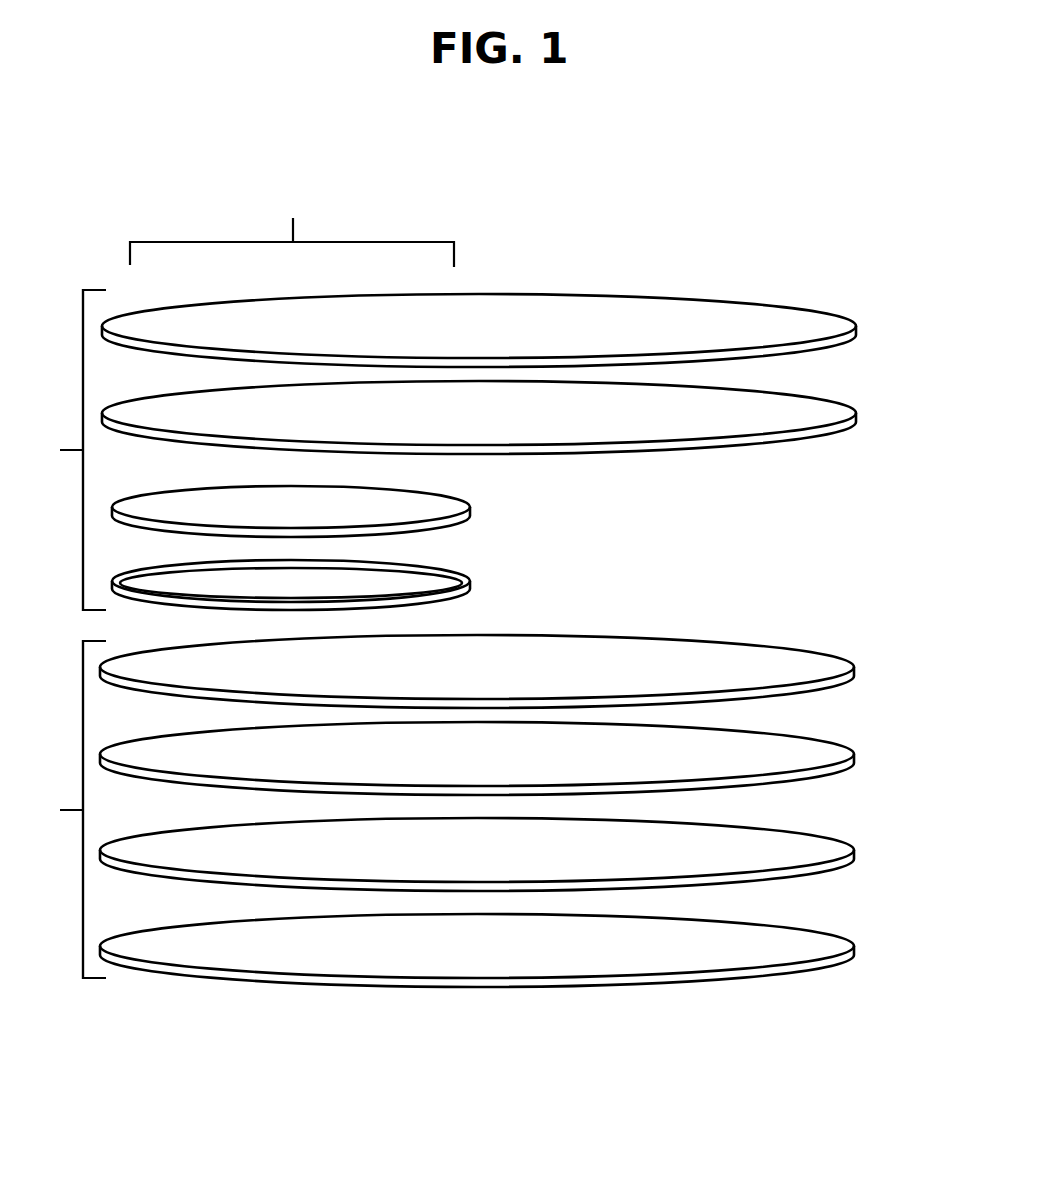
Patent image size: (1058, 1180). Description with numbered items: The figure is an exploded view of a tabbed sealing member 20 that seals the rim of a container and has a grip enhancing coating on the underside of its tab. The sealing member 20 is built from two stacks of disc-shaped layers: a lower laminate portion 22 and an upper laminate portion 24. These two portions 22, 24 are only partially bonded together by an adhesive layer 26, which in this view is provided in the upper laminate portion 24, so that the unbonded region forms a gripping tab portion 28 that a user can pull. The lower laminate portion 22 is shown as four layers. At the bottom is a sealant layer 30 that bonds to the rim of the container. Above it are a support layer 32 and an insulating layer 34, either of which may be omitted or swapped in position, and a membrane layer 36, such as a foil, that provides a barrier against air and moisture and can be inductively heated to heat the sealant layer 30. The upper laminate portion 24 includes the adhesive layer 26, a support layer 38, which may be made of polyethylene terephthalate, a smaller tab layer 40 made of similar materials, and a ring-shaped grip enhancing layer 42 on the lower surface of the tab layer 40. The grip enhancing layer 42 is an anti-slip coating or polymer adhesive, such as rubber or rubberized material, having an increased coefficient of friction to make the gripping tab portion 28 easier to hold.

The tabbed sealing member 20 is at (100, 264).
The lower laminate portion 22 is at (59, 809).
The upper laminate portion 24 is at (59, 450).
The adhesive layer 26 is at (793, 408).
The gripping tab portion 28 is at (292, 214).
The sealant layer 30 is at (793, 942).
The support layer 32 is at (793, 845).
The insulating layer 34 is at (793, 662).
The membrane layer 36 is at (793, 755).
The support layer 38 is at (793, 321).
The tab layer 40 is at (413, 506).
The grip enhancing layer 42 is at (413, 585).